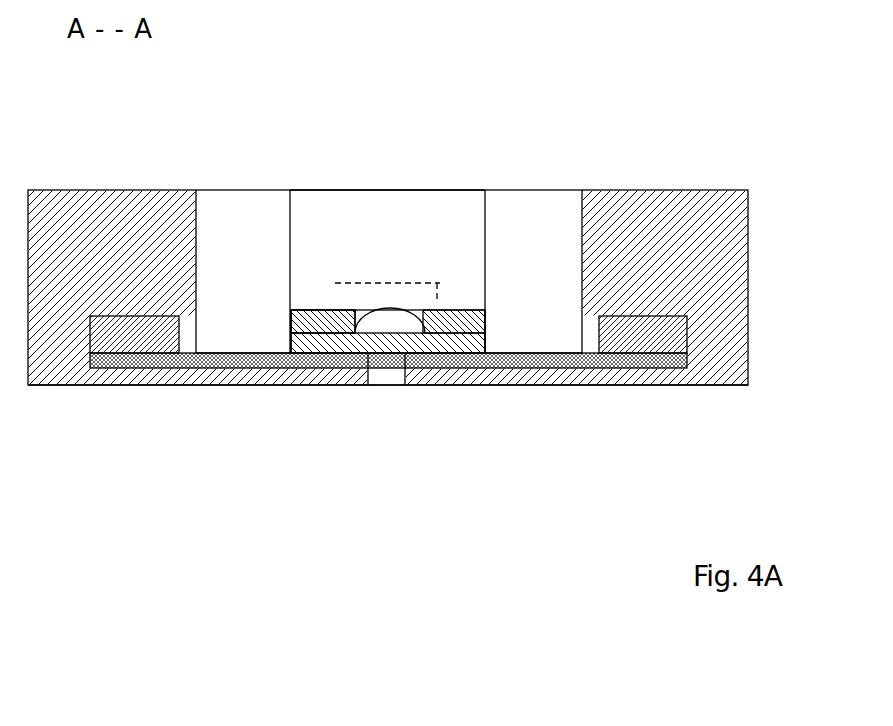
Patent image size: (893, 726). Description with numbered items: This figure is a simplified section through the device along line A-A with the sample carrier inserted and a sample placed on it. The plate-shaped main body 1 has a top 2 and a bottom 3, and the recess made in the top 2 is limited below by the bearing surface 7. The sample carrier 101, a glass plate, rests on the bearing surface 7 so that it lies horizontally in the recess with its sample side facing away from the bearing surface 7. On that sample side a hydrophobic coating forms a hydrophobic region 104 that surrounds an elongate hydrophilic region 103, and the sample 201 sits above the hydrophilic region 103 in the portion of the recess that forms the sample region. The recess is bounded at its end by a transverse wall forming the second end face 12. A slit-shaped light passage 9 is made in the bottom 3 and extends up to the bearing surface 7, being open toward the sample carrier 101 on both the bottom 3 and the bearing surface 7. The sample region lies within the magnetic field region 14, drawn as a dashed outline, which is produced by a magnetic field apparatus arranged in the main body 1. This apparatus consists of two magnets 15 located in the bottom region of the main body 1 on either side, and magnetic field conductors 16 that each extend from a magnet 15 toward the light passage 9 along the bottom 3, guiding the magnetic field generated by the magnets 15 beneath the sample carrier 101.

The main body 1 is at (28, 226).
The top 2 is at (389, 191).
The bottom 3 is at (553, 387).
The bearing surface 7 is at (240, 338).
The light passage 9 is at (392, 378).
The second end face 12 is at (453, 208).
The magnetic field region 14 is at (340, 306).
The magnets 15 is at (102, 340).
The magnetic field conductors 16 is at (165, 355).
The sample carrier 101 is at (479, 355).
The hydrophilic region 103 is at (419, 361).
The hydrophobic region 104 is at (456, 314).
The sample 201 is at (381, 314).